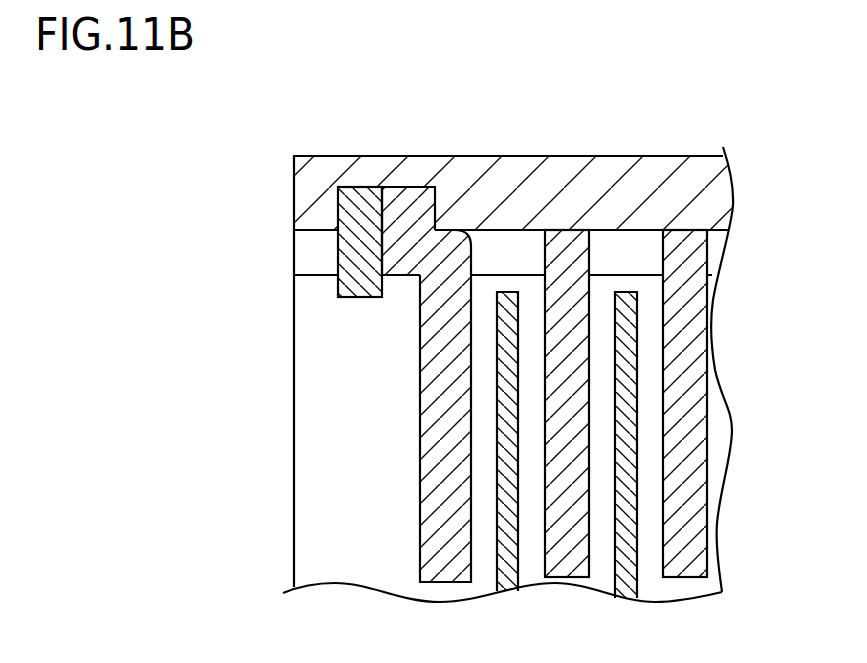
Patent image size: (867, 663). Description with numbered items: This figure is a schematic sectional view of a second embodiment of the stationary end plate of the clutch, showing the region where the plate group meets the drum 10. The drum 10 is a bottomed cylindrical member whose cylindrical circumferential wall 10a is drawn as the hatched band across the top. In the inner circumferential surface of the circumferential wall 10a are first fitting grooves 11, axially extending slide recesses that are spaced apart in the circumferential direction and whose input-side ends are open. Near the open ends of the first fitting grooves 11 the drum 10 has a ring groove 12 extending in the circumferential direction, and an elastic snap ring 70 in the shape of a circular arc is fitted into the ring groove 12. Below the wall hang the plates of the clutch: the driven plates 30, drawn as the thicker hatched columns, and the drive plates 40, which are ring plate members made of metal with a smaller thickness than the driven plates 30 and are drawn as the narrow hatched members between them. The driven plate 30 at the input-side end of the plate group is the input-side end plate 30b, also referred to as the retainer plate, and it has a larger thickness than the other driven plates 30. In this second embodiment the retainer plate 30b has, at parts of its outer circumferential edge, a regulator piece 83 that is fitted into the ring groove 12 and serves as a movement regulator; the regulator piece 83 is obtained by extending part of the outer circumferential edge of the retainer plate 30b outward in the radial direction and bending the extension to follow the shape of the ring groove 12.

The drum 10 is at (513, 161).
The circumferential wall 10a is at (523, 173).
The first fitting groove 11 is at (632, 234).
The ring groove 12 is at (343, 198).
The driven plate 30 is at (690, 362).
The input-side end plate 30b is at (445, 562).
The drive plate 40 is at (625, 583).
The snap ring 70 is at (345, 290).
The regulator piece 83 is at (408, 197).